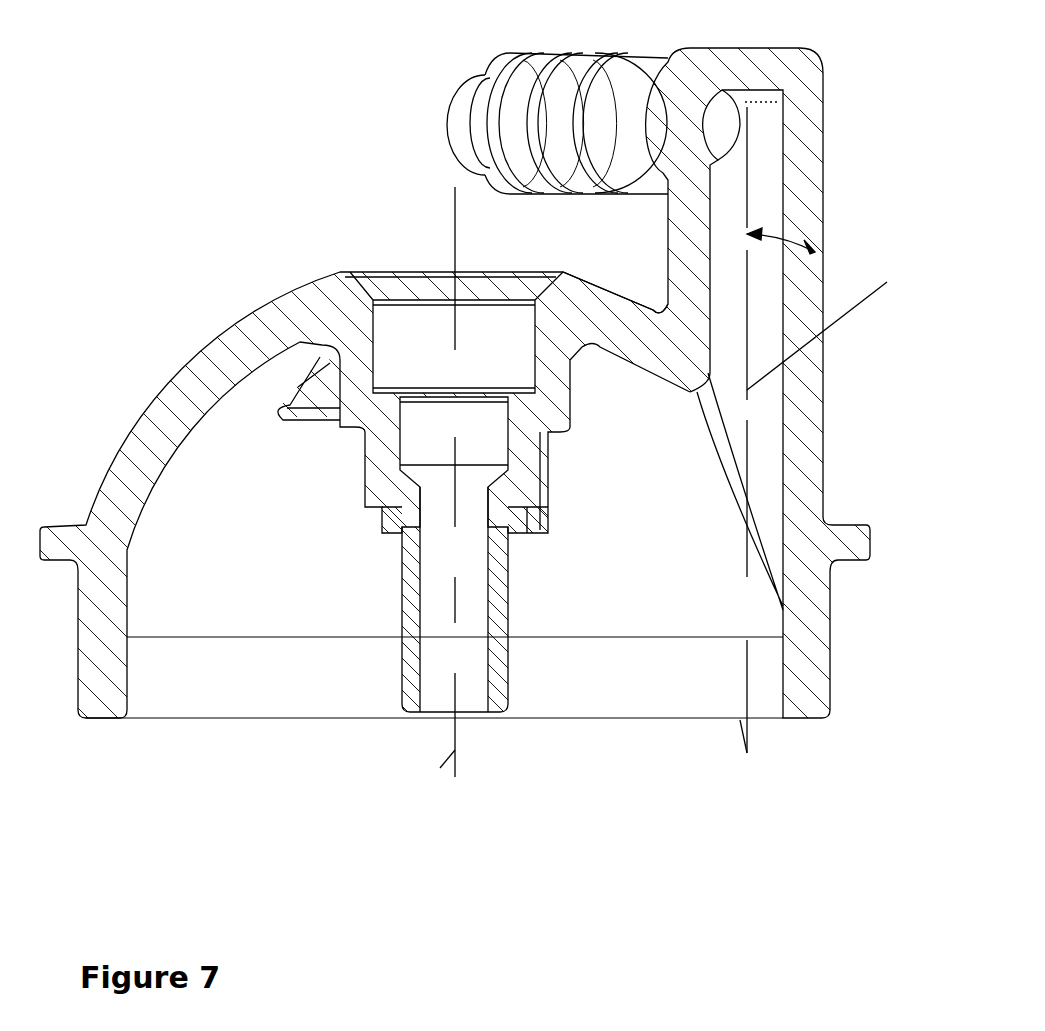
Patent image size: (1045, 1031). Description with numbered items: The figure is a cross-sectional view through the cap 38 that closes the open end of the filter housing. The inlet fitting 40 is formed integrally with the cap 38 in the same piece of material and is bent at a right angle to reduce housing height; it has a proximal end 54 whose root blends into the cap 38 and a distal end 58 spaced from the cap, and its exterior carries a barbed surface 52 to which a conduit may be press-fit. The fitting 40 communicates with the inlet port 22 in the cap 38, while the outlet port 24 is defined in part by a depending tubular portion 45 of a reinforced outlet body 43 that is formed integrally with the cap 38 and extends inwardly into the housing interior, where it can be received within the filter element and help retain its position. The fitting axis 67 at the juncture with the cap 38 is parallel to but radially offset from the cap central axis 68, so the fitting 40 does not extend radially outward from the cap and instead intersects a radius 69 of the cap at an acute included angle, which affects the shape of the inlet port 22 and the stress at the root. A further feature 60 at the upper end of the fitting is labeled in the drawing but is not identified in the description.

The inlet port 22 is at (698, 403).
The outlet port 24 is at (478, 690).
The cap 38 is at (187, 323).
The inlet fitting 40 is at (822, 147).
The reinforced outlet body 43 is at (355, 430).
The depending tubular portion 45 is at (410, 663).
The barbed surface 52 is at (565, 55).
The proximal end 54 is at (657, 292).
The distal end 58 is at (457, 82).
The arm head 60 is at (770, 63).
The fitting axis 67 is at (752, 748).
The cap central axis 68 is at (457, 752).
The radius of the cap 69 is at (842, 322).